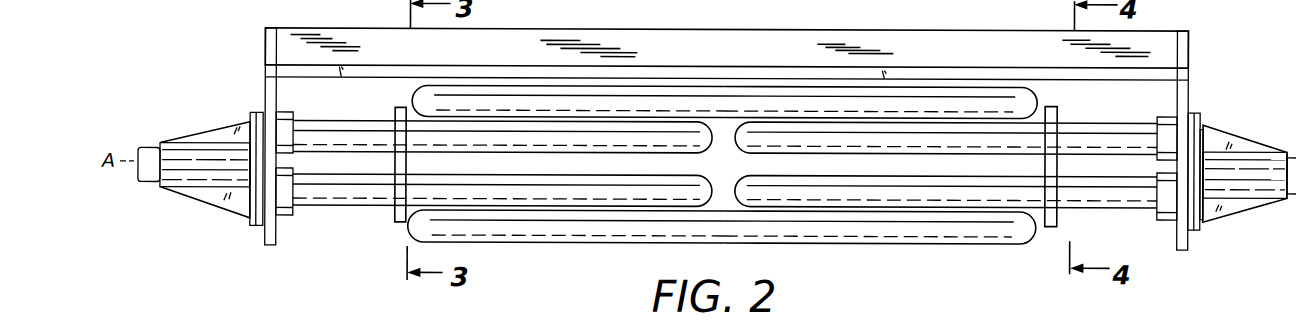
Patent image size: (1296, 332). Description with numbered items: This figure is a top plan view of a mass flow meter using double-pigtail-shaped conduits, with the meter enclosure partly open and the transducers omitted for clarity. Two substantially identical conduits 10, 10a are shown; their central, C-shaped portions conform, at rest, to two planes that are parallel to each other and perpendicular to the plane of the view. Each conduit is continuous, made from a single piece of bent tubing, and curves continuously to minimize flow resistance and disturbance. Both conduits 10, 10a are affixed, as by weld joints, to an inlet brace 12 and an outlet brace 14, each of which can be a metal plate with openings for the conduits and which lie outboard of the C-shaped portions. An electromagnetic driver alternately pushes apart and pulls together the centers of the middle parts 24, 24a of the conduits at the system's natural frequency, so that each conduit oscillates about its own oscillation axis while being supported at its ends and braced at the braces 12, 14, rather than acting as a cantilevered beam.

The conduit 10 is at (831, 246).
The conduit 10a is at (762, 82).
The inlet brace 12 is at (398, 110).
The outlet brace 14 is at (1059, 107).
The middle part 24 is at (575, 247).
The middle part 24a is at (547, 68).